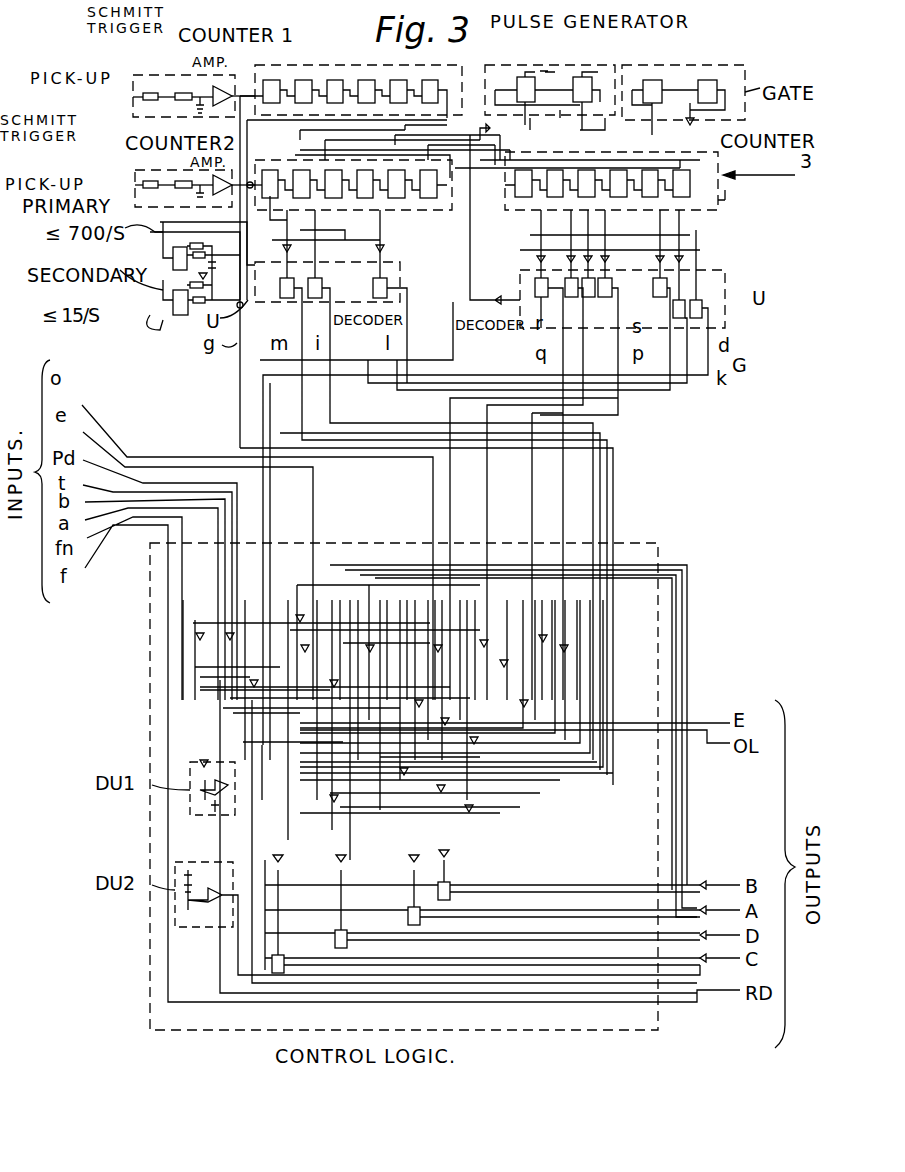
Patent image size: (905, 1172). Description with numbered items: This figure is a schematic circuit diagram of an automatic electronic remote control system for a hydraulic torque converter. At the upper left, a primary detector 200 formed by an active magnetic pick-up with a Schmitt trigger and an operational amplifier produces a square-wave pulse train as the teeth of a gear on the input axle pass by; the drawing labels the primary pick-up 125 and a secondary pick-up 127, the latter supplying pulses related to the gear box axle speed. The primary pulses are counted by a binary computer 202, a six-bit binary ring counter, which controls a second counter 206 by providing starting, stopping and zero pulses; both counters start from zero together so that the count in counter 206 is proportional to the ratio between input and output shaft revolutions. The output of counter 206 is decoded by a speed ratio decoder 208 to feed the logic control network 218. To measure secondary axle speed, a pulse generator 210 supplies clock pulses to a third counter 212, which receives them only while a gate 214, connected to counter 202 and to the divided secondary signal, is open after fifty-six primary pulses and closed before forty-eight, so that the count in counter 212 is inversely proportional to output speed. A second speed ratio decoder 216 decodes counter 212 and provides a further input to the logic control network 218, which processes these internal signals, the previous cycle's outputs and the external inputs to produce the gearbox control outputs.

The primary pick-up 125 is at (143, 97).
The secondary pick-up 127 is at (143, 185).
The primary detector 200 is at (182, 80).
The binary computer 202 is at (240, 38).
The second counter 206 is at (240, 140).
The speed ratio decoder 208 is at (400, 278).
The pulse generator 210 is at (565, 40).
The third binary computer or counter 212 is at (722, 195).
The gate 214 is at (730, 65).
The speed ratio decoder 216 is at (725, 305).
The logic control network 218 is at (472, 1045).